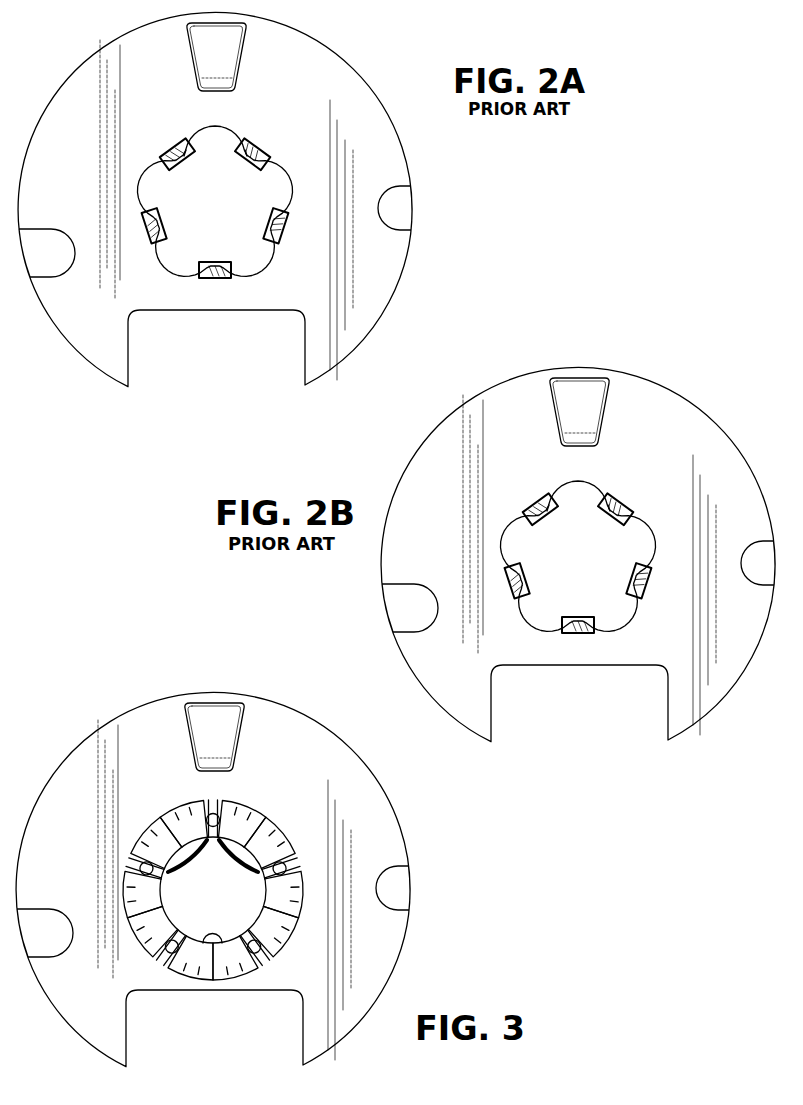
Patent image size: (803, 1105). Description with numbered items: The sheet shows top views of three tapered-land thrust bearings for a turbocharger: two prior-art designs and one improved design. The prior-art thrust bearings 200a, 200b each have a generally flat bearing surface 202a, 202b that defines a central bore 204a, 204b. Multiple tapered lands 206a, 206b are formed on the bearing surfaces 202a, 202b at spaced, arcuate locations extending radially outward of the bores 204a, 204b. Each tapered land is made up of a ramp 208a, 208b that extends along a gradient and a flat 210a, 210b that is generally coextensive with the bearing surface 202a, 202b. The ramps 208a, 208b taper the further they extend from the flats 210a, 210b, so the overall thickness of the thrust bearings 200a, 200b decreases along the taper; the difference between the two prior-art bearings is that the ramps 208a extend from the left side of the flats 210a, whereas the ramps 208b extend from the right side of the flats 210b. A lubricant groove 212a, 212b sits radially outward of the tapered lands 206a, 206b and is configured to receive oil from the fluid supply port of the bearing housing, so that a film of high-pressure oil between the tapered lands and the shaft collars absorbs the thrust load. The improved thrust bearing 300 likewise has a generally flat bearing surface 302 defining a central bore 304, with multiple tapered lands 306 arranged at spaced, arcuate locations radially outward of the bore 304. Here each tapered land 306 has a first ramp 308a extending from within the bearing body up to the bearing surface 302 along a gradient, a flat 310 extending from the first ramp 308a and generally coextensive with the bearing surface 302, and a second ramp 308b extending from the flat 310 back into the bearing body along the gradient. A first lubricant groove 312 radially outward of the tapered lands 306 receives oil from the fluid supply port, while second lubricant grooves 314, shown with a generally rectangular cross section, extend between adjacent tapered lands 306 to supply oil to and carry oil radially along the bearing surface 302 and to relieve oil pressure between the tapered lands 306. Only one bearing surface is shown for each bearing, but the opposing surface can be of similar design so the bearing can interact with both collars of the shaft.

In FIG. 2A, the thrust bearing 200a is at (128, 25).
In FIG. 2A, the bearing surface 202a is at (68, 120).
In FIG. 2A, the central bore 204a is at (165, 268).
In FIG. 2A, the tapered land 206a is at (247, 170).
In FIG. 2A, the ramp 208a is at (247, 150).
In FIG. 2A, the flat 210a is at (186, 150).
In FIG. 2A, the lubricant groove 212a is at (222, 50).
In FIG. 2B, the thrust bearing 200b is at (490, 376).
In FIG. 2B, the bearing surface 202b is at (428, 470).
In FIG. 2B, the central bore 204b is at (530, 620).
In FIG. 2B, the tapered land 206b is at (610, 523).
In FIG. 2B, the ramp 208b is at (548, 503).
In FIG. 2B, the flat 210b is at (608, 503).
In FIG. 2B, the lubricant groove 212b is at (583, 405).
In FIG. 3, the thrust bearing 300 is at (52, 728).
In FIG. 3, the bearing surface 302 is at (315, 757).
In FIG. 3, the central bore 304 is at (205, 950).
In FIG. 3, the tapered land 306 is at (213, 890).
In FIG. 3, the first ramp 308a is at (238, 822).
In FIG. 3, the second ramp 308b is at (190, 825).
In FIG. 3, the flat 310 is at (168, 832).
In FIG. 3, the first lubricant groove 312 is at (203, 718).
In FIG. 3, the second lubricant groove 314 is at (245, 935).